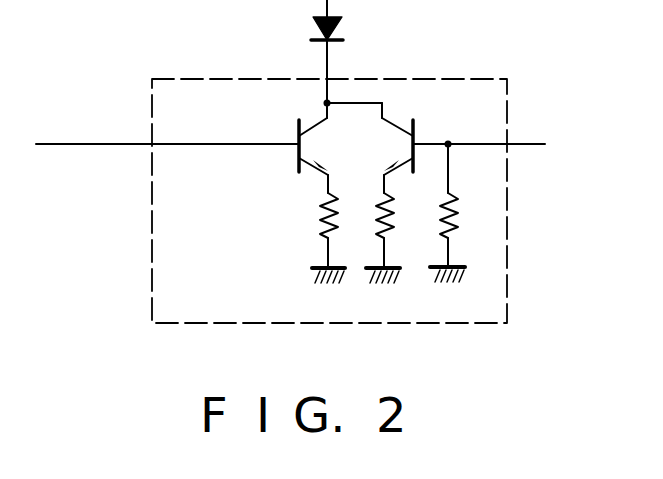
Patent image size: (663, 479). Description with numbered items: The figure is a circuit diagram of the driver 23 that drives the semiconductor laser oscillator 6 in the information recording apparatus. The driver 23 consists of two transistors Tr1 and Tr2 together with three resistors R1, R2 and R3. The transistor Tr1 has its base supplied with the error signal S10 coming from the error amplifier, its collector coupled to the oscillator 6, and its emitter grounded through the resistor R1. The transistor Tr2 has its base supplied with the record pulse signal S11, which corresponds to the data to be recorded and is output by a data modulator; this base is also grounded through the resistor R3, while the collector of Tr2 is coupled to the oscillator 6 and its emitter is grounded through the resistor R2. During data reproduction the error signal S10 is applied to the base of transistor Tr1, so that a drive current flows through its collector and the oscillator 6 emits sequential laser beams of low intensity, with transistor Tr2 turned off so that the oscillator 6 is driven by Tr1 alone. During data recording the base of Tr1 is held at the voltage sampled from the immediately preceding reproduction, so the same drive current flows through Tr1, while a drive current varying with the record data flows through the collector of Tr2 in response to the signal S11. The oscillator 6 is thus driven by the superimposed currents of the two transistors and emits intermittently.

The driver 23 is at (175, 78).
The semiconductor laser oscillator 6 is at (345, 26).
The transistor Tr1 is at (290, 127).
The transistor Tr2 is at (420, 128).
The resistor R1 is at (320, 209).
The resistor R2 is at (392, 222).
The resistor R3 is at (455, 210).
The error signal S10 is at (72, 147).
The record pulse signal S11 is at (535, 144).